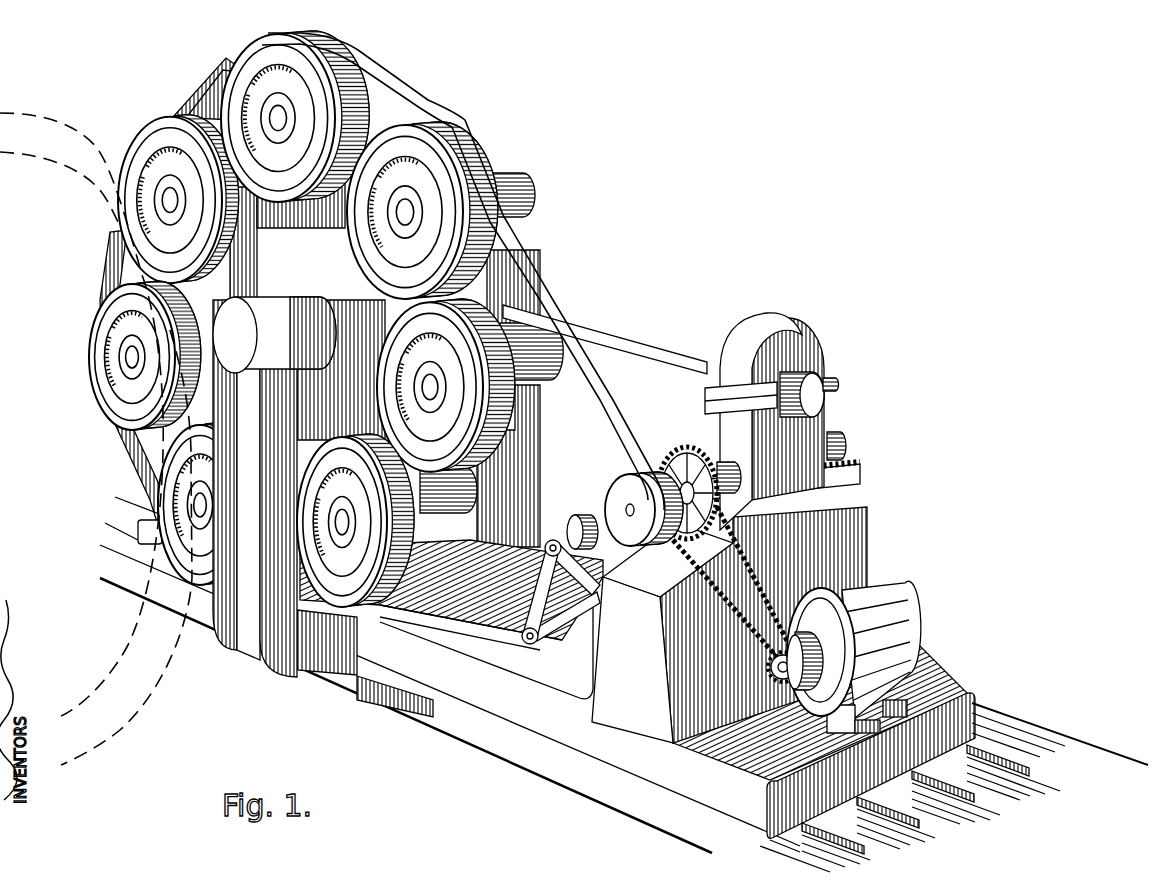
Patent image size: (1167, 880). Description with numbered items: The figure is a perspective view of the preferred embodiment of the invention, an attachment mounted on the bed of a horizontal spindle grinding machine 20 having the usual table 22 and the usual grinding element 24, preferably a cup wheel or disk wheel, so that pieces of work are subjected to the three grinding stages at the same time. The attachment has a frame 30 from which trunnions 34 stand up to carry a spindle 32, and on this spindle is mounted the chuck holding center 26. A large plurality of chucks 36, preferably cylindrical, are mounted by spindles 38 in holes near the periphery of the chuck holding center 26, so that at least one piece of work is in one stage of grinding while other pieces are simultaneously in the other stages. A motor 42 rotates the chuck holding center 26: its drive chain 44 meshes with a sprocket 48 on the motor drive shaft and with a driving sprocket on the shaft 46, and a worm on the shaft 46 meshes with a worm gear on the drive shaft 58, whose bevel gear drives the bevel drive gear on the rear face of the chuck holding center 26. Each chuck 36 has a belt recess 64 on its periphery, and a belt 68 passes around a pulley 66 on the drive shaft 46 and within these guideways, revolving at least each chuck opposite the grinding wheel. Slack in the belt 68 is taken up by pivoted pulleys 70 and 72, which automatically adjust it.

The grinding machine 20 is at (954, 778).
The table 22 is at (1058, 733).
The grinding element 24 is at (118, 688).
The chuck holding center 26 is at (400, 104).
The frame 30 is at (947, 686).
The spindle 32 is at (230, 351).
The trunnions 34 is at (232, 622).
The chucks 36 is at (487, 165).
The spindles 38 is at (312, 230).
The motor 42 is at (900, 600).
The drive chain 44 is at (735, 625).
The shaft 46 is at (632, 508).
The sprocket 48 is at (777, 703).
The drive shaft 58 is at (640, 343).
The belt recess 64 is at (500, 272).
The pulley 66 is at (632, 547).
The belt 68 is at (620, 425).
The pulley 70 is at (577, 525).
The pulley 72 is at (537, 662).